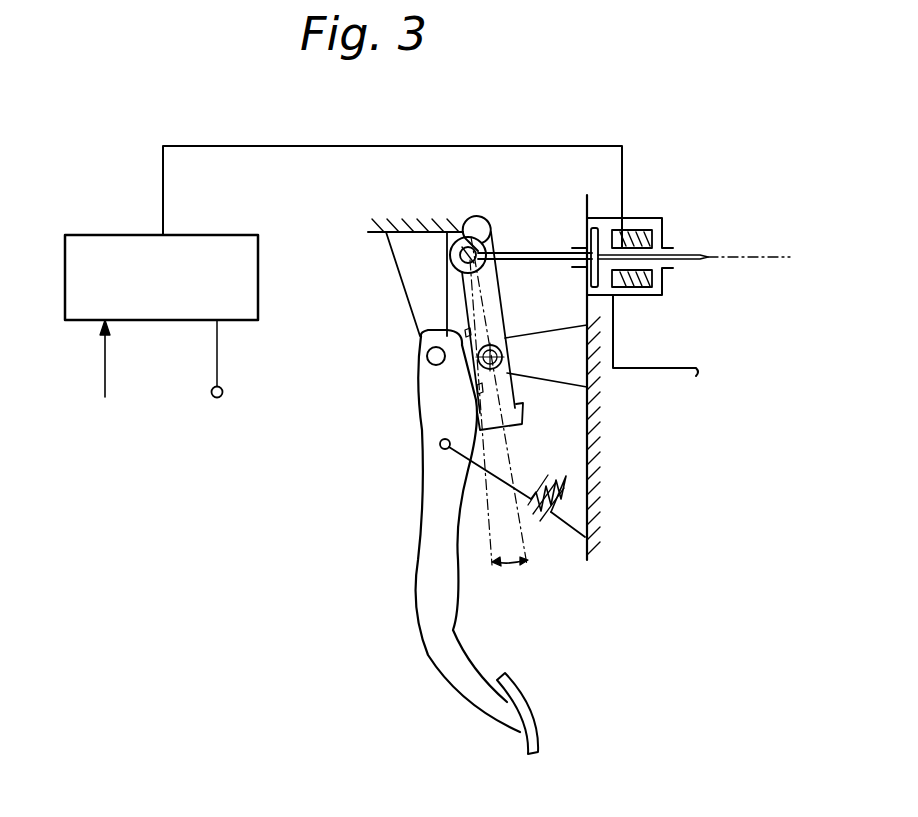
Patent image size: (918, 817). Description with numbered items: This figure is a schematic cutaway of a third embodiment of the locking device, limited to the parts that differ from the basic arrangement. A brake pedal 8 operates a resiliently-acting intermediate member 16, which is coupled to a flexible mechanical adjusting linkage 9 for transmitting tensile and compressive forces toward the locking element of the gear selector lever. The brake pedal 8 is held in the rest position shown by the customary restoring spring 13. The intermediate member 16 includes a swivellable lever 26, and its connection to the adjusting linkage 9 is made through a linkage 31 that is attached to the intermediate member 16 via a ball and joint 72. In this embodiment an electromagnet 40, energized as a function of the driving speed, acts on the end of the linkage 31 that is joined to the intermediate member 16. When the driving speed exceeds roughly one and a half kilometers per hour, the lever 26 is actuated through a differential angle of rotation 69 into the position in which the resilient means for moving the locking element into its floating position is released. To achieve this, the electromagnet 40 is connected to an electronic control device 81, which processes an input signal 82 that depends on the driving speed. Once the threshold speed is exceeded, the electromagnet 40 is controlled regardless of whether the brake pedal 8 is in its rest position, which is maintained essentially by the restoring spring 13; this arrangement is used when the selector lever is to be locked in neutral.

The brake pedal 8 is at (426, 658).
The flexible mechanical adjusting linkage 9 is at (750, 258).
The restoring spring 13 is at (548, 537).
The intermediate member 16 is at (507, 321).
The lever 26 is at (458, 300).
The linkage 31 is at (522, 255).
The electromagnet 40 is at (638, 217).
The differential angle of rotation 69 is at (509, 570).
The ball and joint 72 is at (476, 244).
The electronic control device 81 is at (103, 232).
The input signal 82 is at (104, 370).